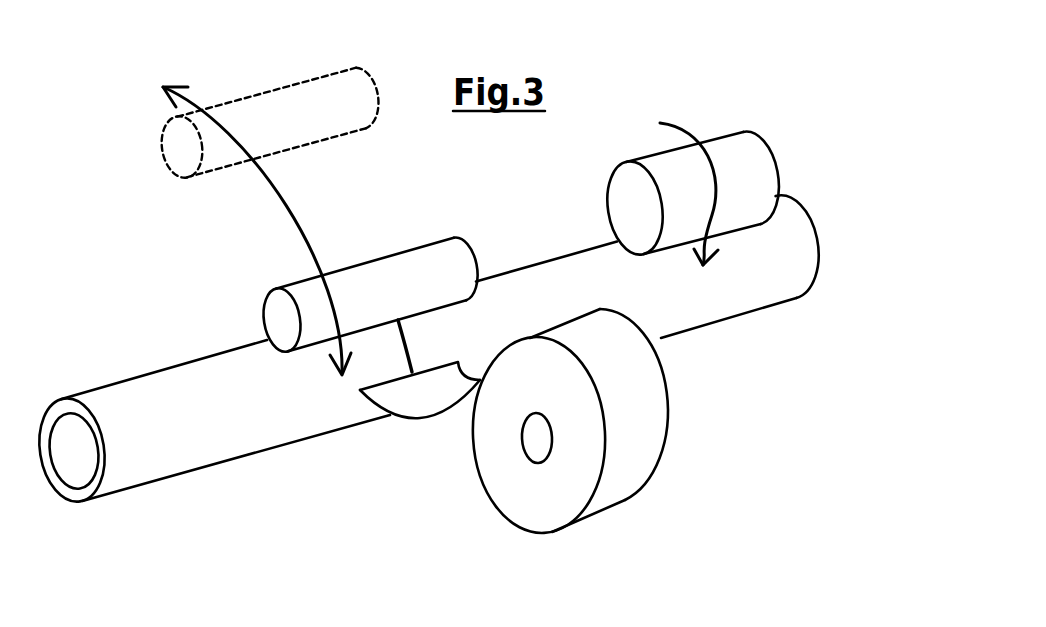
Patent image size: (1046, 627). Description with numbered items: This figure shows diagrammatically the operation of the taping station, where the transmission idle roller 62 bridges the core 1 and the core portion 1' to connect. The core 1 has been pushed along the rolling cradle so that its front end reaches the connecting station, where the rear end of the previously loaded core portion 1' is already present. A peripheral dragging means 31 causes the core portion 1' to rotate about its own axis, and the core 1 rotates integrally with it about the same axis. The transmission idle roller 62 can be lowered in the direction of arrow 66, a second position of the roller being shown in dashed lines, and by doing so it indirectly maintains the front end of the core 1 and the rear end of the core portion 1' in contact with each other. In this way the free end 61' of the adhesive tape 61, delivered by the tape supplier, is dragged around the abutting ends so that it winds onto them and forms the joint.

The core 1 is at (211, 410).
The core portion 1' is at (647, 252).
The peripheral dragging means 31 is at (747, 168).
The adhesive tape 61 is at (612, 422).
The free end of the adhesive tape 61' is at (420, 406).
The transmission idle roller 62 is at (310, 107).
The arrow 66 is at (287, 205).